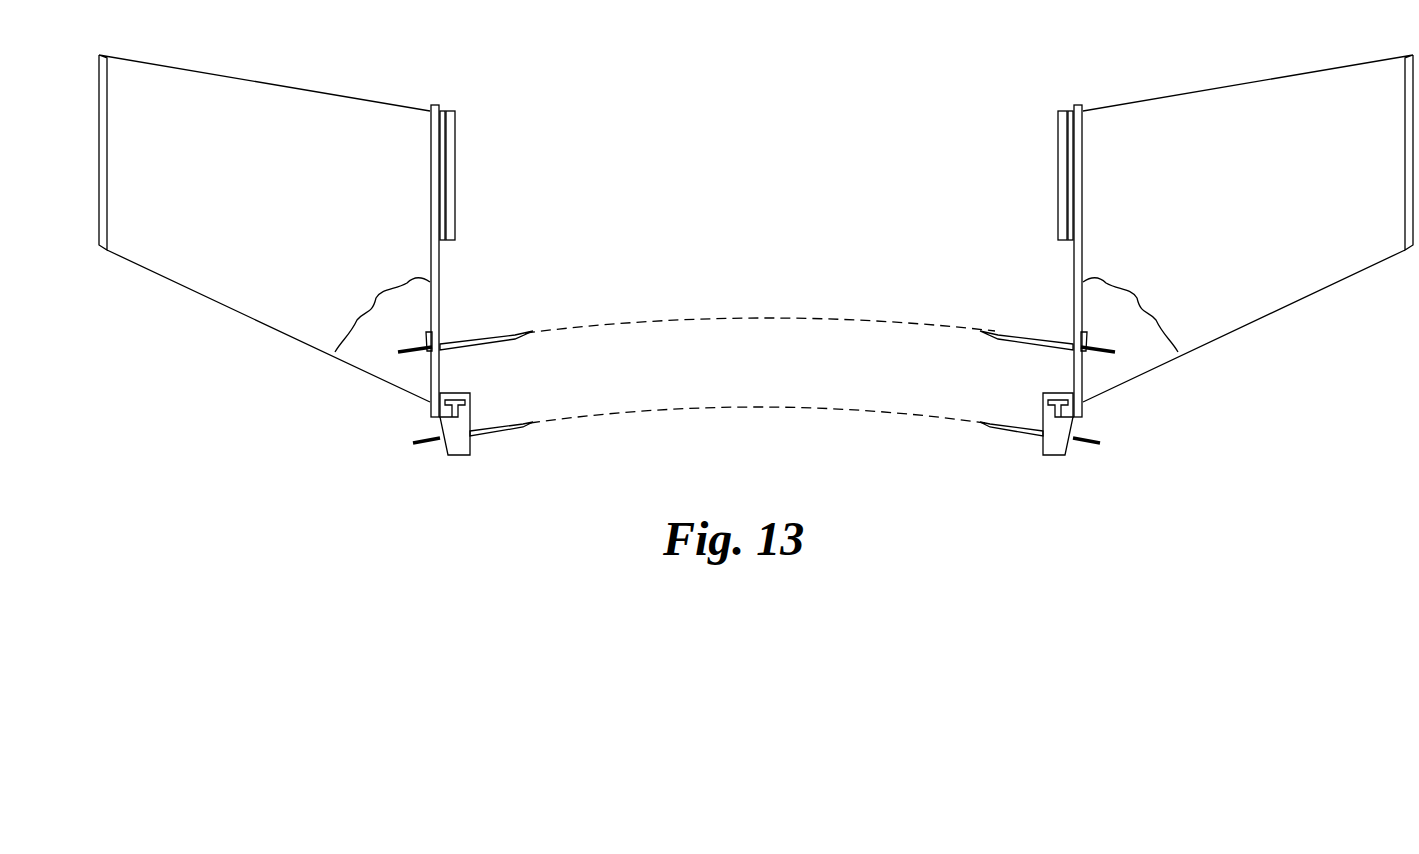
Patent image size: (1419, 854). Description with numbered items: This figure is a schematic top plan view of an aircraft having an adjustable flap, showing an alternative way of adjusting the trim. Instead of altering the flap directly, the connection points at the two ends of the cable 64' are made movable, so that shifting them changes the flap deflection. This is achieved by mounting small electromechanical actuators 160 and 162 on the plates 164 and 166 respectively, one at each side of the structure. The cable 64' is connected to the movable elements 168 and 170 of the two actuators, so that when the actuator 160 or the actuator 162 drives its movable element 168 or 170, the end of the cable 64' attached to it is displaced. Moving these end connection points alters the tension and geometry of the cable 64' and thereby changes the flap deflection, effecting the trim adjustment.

The plate 164 is at (437, 260).
The plate 166 is at (1076, 260).
The electromechanical actuator 160 is at (470, 400).
The electromechanical actuator 162 is at (1043, 398).
The movable element 168 is at (457, 447).
The movable element 170 is at (1058, 445).
The cable 64' is at (986, 457).